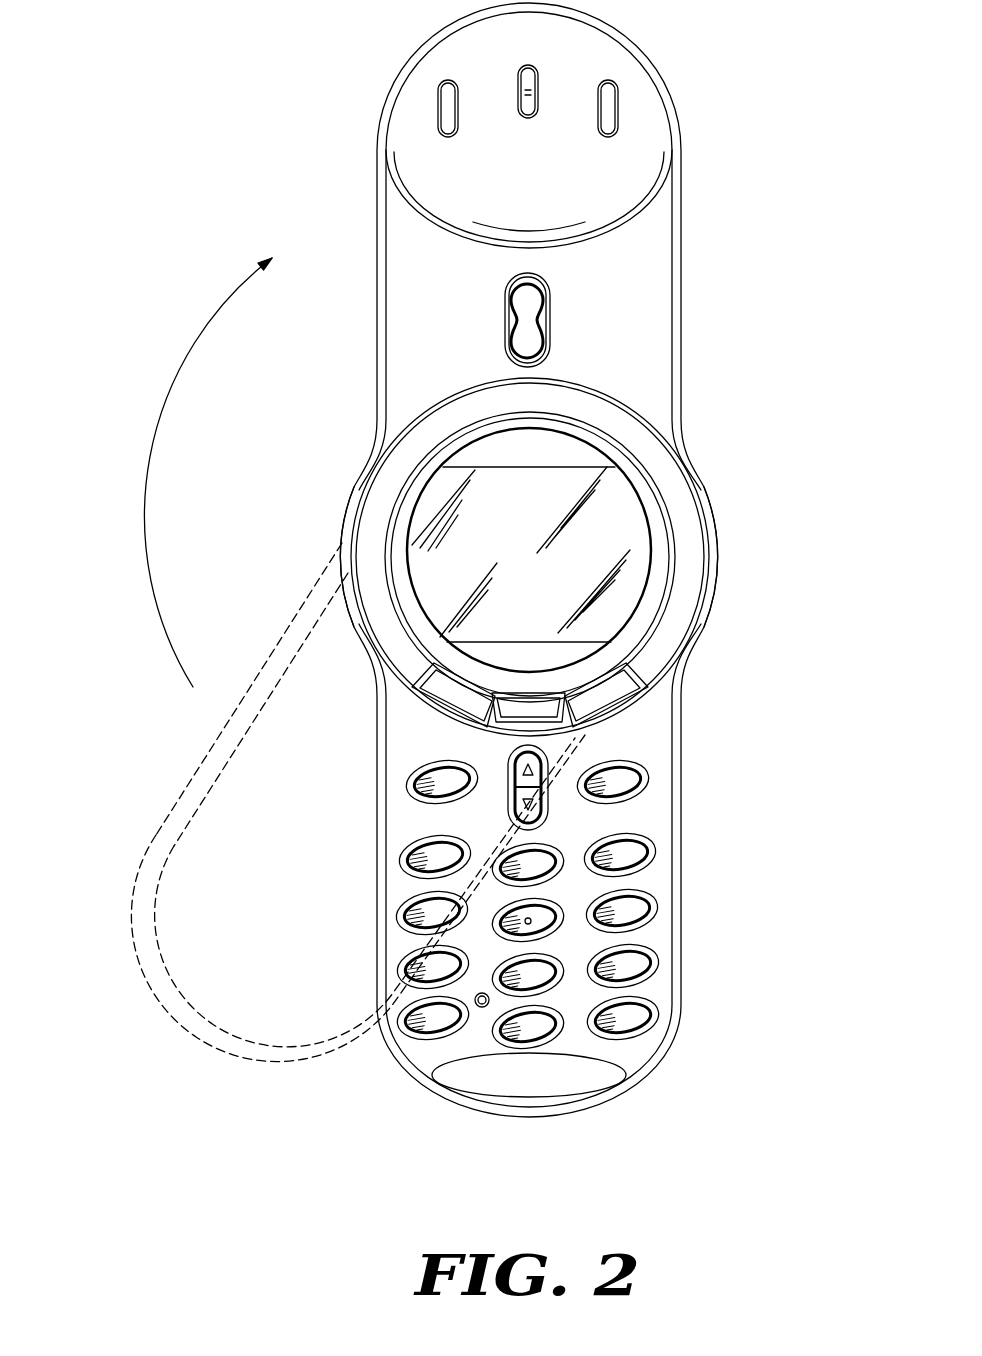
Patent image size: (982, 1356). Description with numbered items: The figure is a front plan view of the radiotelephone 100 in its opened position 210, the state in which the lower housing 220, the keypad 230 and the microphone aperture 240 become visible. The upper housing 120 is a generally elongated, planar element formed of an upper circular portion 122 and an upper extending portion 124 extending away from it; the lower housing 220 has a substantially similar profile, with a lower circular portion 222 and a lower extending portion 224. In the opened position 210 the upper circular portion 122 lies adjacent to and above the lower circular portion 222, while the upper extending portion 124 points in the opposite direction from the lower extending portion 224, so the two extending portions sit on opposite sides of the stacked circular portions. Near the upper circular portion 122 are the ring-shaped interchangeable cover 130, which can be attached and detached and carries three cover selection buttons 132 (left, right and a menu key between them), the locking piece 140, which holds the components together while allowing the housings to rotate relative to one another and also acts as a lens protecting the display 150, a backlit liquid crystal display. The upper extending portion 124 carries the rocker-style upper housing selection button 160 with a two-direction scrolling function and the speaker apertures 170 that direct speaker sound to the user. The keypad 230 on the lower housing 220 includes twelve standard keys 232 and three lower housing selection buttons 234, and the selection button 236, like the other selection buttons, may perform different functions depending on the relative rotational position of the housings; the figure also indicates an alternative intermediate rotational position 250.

The radiotelephone 100 is at (222, 54).
The upper housing 120 is at (683, 185).
The upper circular portion 122 is at (718, 543).
The upper extending portion 124 is at (683, 140).
The interchangeable cover 130 is at (678, 500).
The cover selection buttons 132 is at (528, 712).
The locking piece 140 is at (513, 452).
The display 150 is at (524, 540).
The upper housing selection button 160 is at (530, 320).
The speaker apertures 170 is at (448, 92).
The opened position 210 is at (714, 105).
The lower housing 220 is at (377, 910).
The lower circular portion 222 is at (343, 543).
The lower extending portion 224 is at (378, 948).
The keypad 230 is at (403, 810).
The standard keys 232 is at (687, 830).
The lower housing selection buttons 234 is at (687, 740).
The selection button 236 is at (542, 812).
The microphone aperture 240 is at (480, 1008).
The rotation direction arrow 250 is at (218, 318).